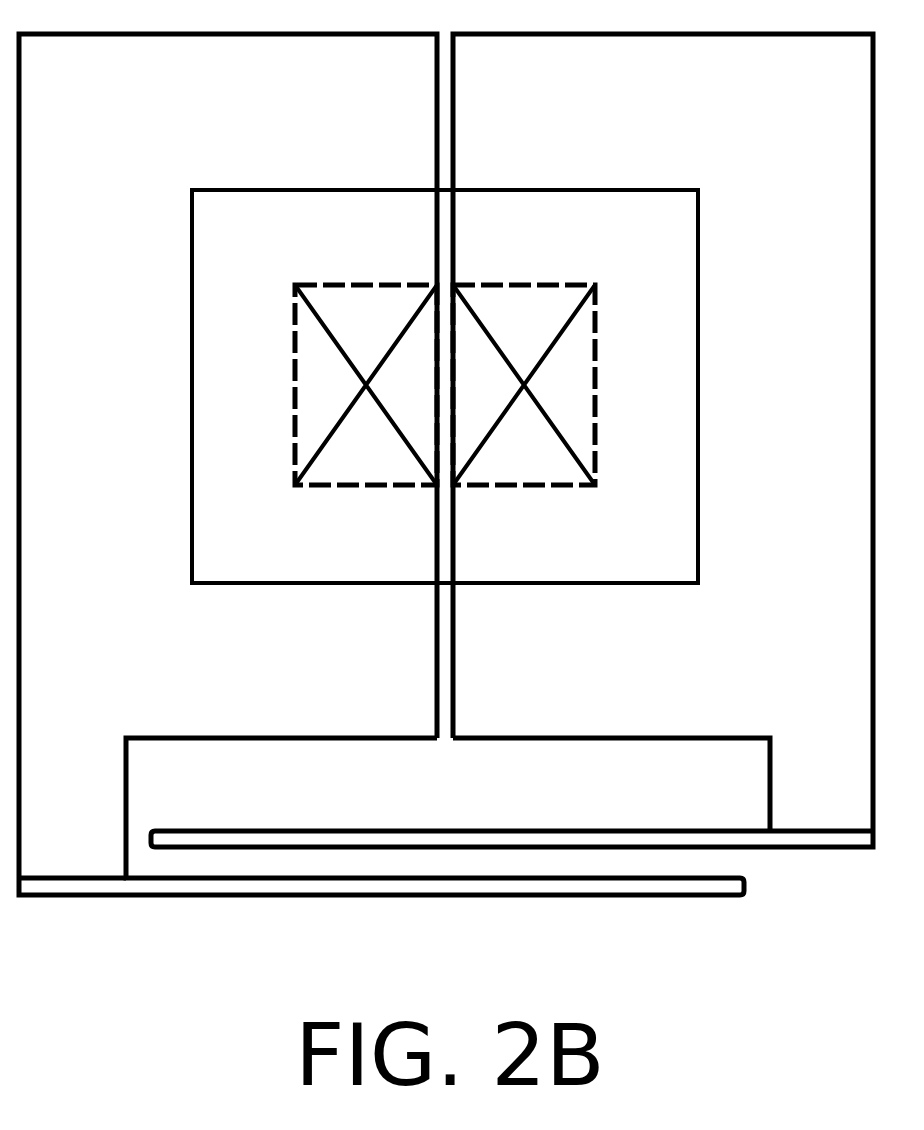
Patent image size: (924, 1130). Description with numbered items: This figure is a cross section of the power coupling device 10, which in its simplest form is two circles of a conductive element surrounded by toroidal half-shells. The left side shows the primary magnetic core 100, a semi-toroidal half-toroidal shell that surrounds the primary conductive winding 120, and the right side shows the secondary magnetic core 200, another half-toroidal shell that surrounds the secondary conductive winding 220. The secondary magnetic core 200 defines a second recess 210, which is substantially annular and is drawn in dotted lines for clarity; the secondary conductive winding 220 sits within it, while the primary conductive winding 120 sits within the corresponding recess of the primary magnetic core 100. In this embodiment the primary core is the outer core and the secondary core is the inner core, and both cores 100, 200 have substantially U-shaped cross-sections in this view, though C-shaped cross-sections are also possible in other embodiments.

The primary magnetic core 100 is at (235, 253).
The secondary magnetic core 200 is at (598, 253).
The power coupling device 10 is at (295, 383).
The second recess 210 is at (598, 383).
The primary conductive winding 120 is at (362, 443).
The secondary conductive winding 220 is at (522, 443).